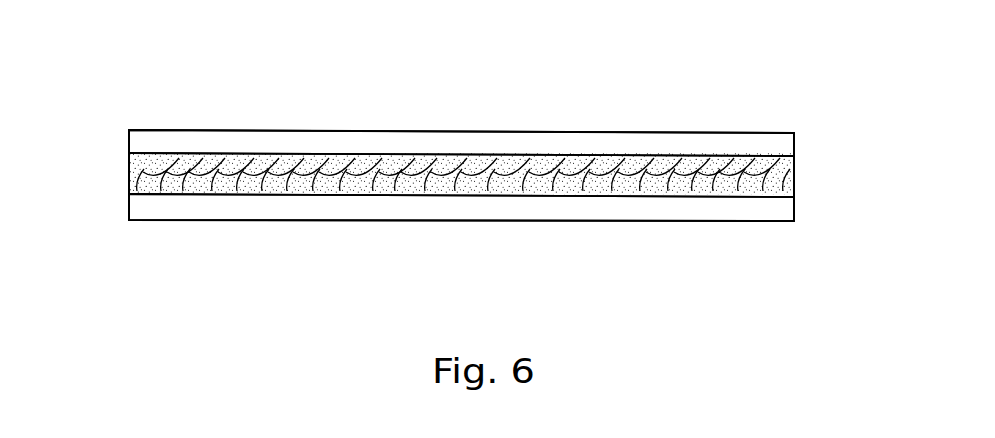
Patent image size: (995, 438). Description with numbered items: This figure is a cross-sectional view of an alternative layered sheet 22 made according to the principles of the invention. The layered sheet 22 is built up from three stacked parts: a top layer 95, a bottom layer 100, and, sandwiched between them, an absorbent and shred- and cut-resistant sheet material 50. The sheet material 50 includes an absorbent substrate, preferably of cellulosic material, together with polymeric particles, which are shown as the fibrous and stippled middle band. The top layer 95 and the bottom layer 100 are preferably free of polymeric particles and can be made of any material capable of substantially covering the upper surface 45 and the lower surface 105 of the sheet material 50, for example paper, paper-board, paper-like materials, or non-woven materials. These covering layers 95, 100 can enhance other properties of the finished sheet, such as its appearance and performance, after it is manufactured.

The layered sheet 22 is at (800, 172).
The top layer 95 is at (388, 144).
The surface 45 is at (610, 155).
The absorbent and shred- and cut-resistant sheet material 50 is at (142, 182).
The surface 105 is at (328, 196).
The bottom layer 100 is at (518, 208).